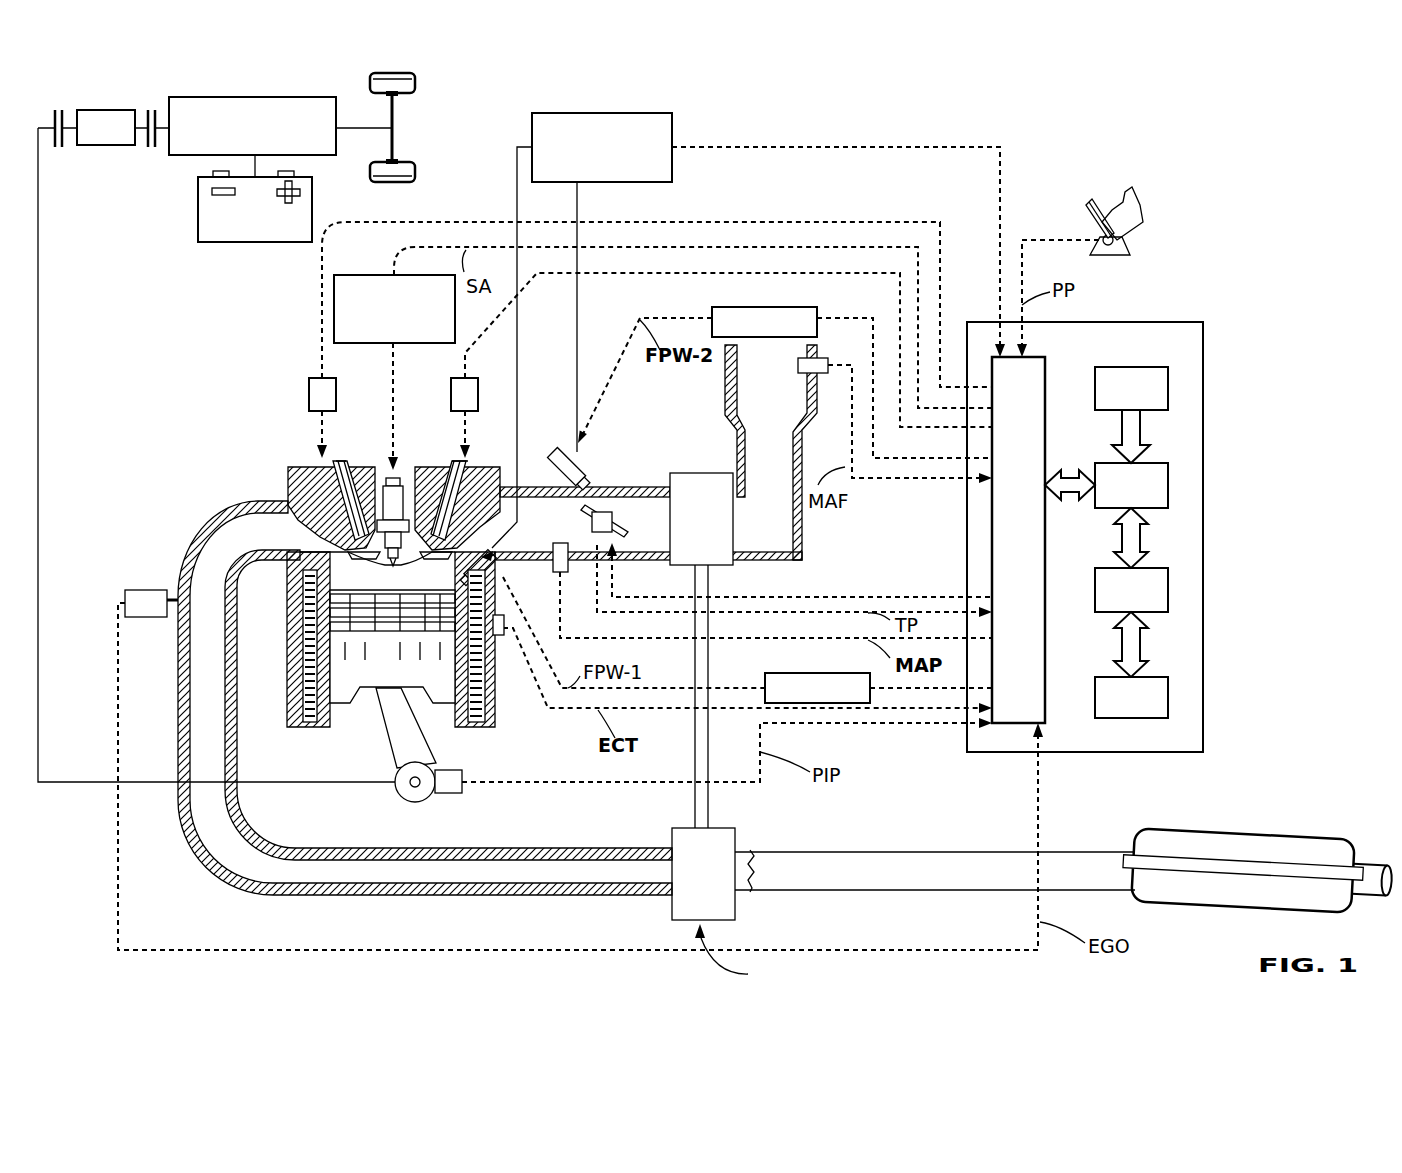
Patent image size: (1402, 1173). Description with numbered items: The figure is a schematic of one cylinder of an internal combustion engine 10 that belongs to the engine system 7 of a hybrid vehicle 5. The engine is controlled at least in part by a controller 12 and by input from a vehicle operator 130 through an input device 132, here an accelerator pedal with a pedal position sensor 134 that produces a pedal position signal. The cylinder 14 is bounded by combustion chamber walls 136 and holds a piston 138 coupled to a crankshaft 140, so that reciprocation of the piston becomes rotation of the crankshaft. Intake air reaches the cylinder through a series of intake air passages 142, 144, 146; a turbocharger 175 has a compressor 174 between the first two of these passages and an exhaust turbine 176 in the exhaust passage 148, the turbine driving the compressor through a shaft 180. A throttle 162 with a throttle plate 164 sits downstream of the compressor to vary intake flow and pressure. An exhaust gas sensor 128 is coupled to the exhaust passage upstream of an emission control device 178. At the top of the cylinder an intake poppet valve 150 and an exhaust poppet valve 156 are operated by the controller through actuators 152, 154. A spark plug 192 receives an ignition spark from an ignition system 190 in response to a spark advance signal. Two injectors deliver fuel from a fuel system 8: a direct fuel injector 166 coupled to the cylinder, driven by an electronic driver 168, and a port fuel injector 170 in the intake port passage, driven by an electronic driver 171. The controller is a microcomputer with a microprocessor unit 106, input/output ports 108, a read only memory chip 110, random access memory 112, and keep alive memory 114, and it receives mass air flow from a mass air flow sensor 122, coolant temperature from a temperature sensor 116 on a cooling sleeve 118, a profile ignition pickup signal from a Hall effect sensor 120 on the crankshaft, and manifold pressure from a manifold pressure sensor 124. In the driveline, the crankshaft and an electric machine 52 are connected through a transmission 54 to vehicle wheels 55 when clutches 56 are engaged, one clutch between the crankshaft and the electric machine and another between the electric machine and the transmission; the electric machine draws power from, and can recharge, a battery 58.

The vehicle 5 is at (1298, 135).
The engine system 7 is at (1272, 740).
The fuel system 8 is at (640, 113).
The internal combustion engine 10 is at (226, 420).
The controller 12 is at (1203, 325).
The cylinder 14 is at (290, 596).
The electric machine 52 is at (107, 148).
The transmission 54 is at (312, 156).
The vehicle wheels 55 is at (398, 182).
The clutch 56 is at (55, 112).
The battery 58 is at (250, 243).
The microprocessor unit 106 is at (1168, 480).
The input/output ports 108 is at (1045, 366).
The read only memory chip 110 is at (1168, 386).
The random access memory 112 is at (1168, 592).
The keep alive memory 114 is at (1168, 698).
The temperature sensor 116 is at (500, 640).
The cooling sleeve 118 is at (492, 697).
The Hall effect sensor 120 is at (452, 795).
The mass air flow sensor 122 is at (822, 358).
The manifold pressure sensor 124 is at (563, 575).
The exhaust gas sensor 128 is at (125, 594).
The vehicle operator 130 is at (1140, 202).
The input device 132 is at (1095, 215).
The pedal position sensor 134 is at (1125, 241).
The combustion chamber walls 136 is at (330, 715).
The piston 138 is at (375, 678).
The crankshaft 140 is at (403, 797).
The intake air passage 142 is at (790, 392).
The intake air passage 144 is at (668, 530).
The intake air passage 146 is at (578, 530).
The exhaust passage 148 is at (275, 541).
The intake poppet valve 150 is at (410, 505).
The actuator 152 is at (450, 388).
The actuator 154 is at (308, 385).
The exhaust poppet valve 156 is at (300, 496).
The throttle 162 is at (620, 508).
The throttle plate 164 is at (597, 505).
The fuel injector 166 is at (470, 558).
The electronic driver 168 is at (765, 676).
The fuel injector 170 is at (560, 468).
The electronic driver 171 is at (712, 310).
The compressor 174 is at (722, 530).
The turbocharger 175 is at (740, 954).
The exhaust turbine 176 is at (721, 889).
The emission control device 178 is at (1315, 835).
The shaft 180 is at (710, 790).
The ignition system 190 is at (380, 275).
The spark plug 192 is at (388, 497).